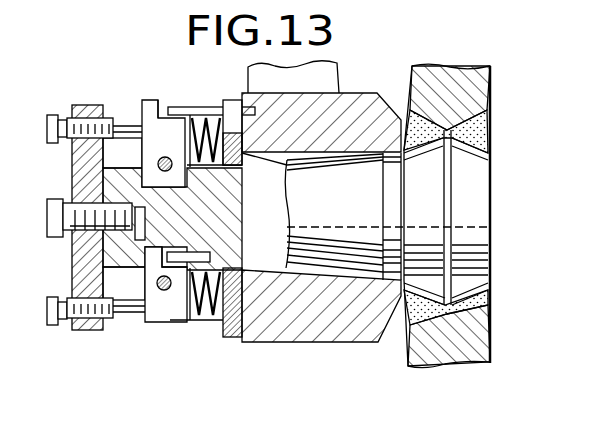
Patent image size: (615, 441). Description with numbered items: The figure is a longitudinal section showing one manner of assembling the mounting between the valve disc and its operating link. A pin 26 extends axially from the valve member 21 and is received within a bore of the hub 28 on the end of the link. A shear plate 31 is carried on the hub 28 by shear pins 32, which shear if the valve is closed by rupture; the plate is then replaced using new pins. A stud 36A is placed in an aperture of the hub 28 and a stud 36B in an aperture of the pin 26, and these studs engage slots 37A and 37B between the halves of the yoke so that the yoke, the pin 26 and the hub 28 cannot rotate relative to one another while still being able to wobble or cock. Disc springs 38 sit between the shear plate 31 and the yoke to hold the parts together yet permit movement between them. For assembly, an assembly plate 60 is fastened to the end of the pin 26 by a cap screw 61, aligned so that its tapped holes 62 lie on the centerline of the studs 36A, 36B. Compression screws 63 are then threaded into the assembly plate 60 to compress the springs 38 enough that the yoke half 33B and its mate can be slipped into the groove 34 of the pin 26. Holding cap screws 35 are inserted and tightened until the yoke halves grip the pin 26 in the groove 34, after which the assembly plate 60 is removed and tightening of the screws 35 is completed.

The valve member 21 is at (453, 63).
The pin 26 is at (352, 207).
The hub 28 is at (340, 342).
The shear plate 31 is at (226, 337).
The shear pins 32 is at (246, 150).
The yoke half 33B is at (181, 325).
The groove 34 is at (142, 184).
The cap screws 35 is at (162, 290).
The stud 36A is at (200, 107).
The stud 36B is at (203, 226).
The slot 37A is at (166, 107).
The slot 37B is at (183, 228).
The disc springs 38 is at (224, 134).
The assembly plate 60 is at (82, 117).
The cap screw 61 is at (60, 228).
The tapped holes 62 is at (96, 122).
The compression screws 63 is at (47, 132).